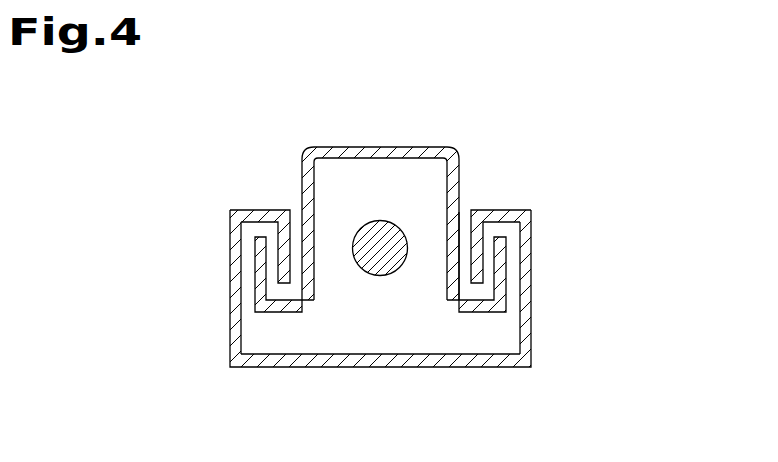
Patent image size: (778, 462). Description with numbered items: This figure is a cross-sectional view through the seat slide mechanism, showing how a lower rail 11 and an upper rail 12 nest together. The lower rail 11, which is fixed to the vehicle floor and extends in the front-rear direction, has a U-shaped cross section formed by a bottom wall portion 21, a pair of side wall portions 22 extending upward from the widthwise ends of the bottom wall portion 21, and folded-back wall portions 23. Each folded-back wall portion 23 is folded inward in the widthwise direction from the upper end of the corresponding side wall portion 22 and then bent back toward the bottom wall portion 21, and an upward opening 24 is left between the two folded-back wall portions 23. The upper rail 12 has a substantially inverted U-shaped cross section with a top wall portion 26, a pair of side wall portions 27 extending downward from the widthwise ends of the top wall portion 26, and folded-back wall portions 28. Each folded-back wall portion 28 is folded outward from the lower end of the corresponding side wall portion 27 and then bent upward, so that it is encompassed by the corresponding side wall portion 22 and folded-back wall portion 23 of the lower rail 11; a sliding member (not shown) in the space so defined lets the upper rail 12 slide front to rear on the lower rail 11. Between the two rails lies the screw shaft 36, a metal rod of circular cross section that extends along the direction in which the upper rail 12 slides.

The lower rail 11 is at (380, 289).
The upper rail 12 is at (386, 254).
The bottom wall portion 21 is at (366, 368).
The side wall portion 22 is at (232, 291).
The folded-back wall portion 23 is at (265, 214).
The upward opening 24 is at (465, 213).
The top wall portion 26 is at (359, 147).
The side wall portion 27 is at (302, 172).
The folded-back wall portion 28 is at (286, 304).
The screw shaft 36 is at (395, 272).